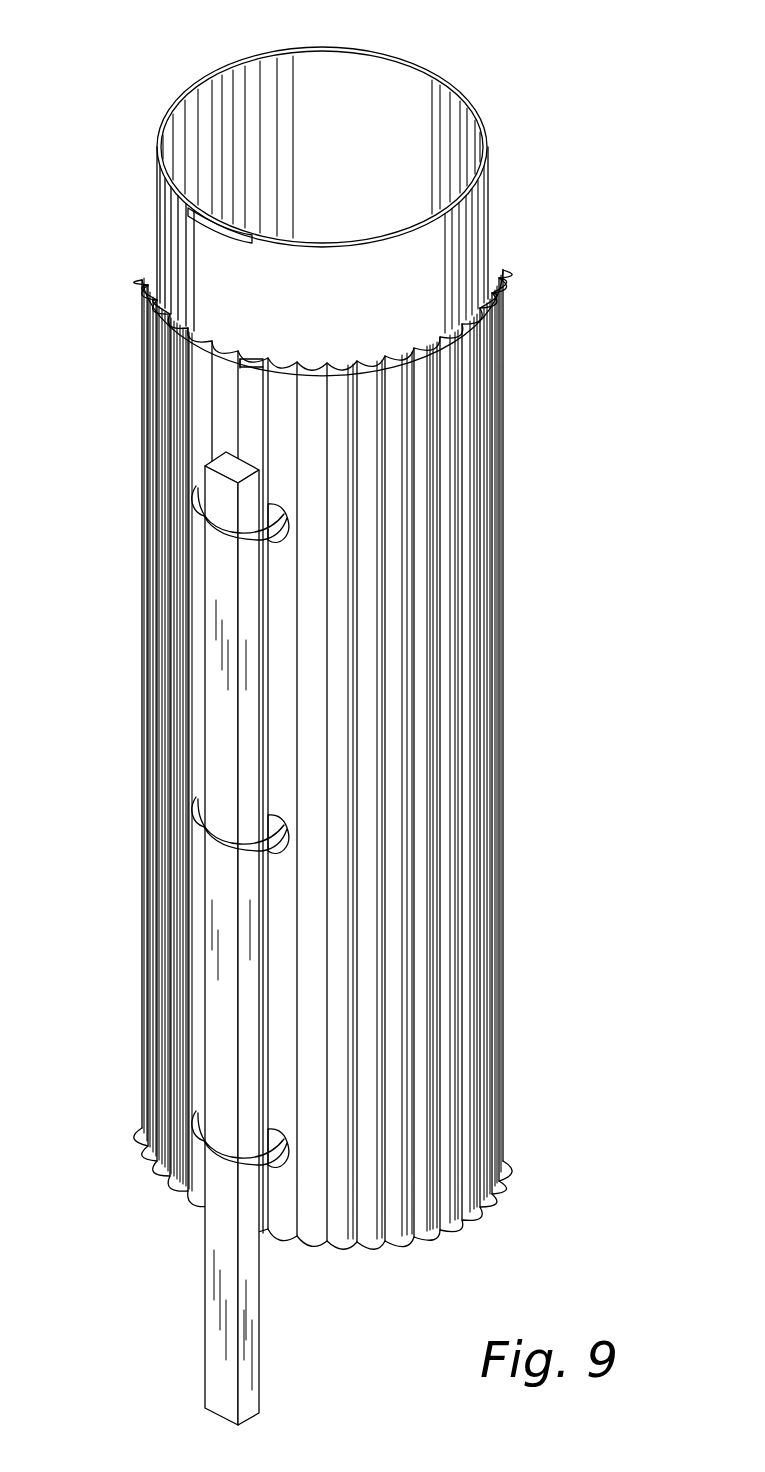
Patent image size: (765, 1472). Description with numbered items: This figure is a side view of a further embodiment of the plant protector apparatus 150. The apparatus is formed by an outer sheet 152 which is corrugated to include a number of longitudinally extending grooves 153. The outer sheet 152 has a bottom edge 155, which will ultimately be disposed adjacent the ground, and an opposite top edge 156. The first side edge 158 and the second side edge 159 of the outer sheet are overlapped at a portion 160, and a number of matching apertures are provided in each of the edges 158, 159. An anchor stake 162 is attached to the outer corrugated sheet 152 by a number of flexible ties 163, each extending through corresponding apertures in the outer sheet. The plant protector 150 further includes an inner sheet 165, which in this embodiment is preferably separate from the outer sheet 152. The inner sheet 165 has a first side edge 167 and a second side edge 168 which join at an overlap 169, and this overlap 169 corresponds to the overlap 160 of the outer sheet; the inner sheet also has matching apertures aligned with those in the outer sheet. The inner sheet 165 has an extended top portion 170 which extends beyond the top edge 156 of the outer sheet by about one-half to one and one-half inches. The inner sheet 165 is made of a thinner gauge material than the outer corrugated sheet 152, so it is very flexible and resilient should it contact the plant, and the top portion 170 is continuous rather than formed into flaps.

The plant protector apparatus 150 is at (375, 761).
The outer sheet 152 is at (375, 761).
The longitudinally extending grooves 153 is at (425, 1002).
The bottom edge 155 is at (432, 1230).
The top edge 156 is at (490, 292).
The first side edge 158 is at (238, 430).
The second side edge 159 is at (262, 362).
The overlapped portion 160 is at (246, 378).
The anchor stake 162 is at (197, 530).
The flexible ties 163 is at (197, 850).
The inner sheet 165 is at (285, 173).
The first side edge of inner sheet 167 is at (190, 268).
The second side edge of inner sheet 168 is at (253, 234).
The overlap 169 is at (190, 230).
The extended top portion 170 is at (160, 186).